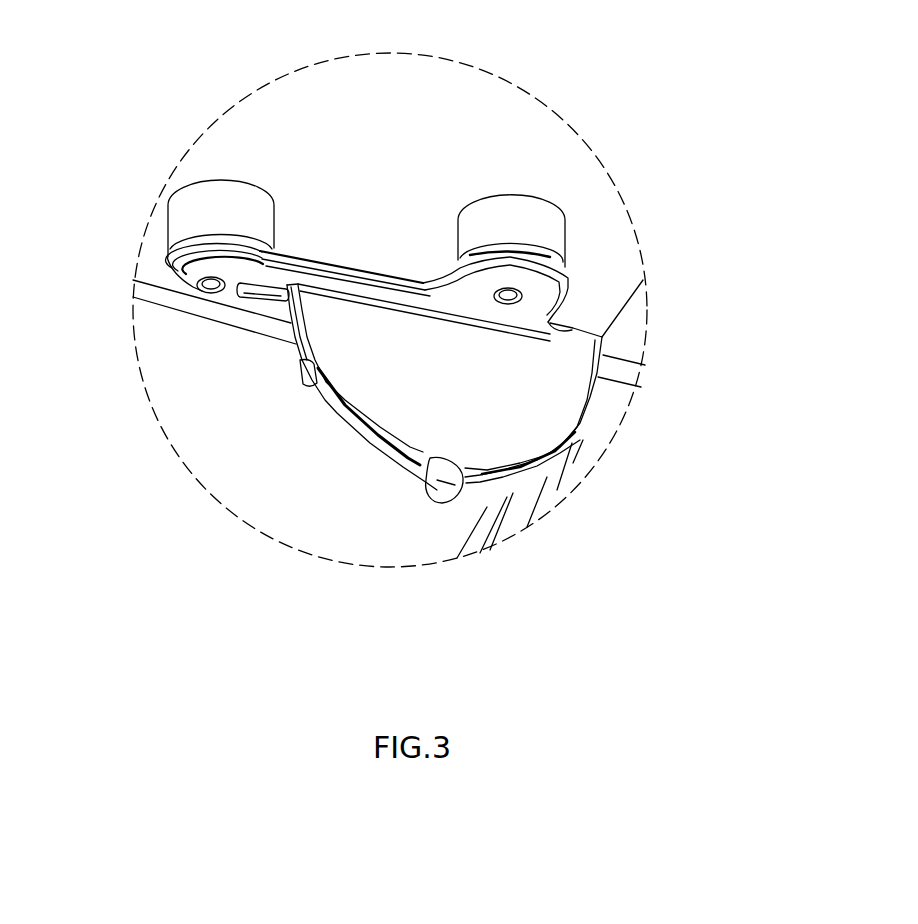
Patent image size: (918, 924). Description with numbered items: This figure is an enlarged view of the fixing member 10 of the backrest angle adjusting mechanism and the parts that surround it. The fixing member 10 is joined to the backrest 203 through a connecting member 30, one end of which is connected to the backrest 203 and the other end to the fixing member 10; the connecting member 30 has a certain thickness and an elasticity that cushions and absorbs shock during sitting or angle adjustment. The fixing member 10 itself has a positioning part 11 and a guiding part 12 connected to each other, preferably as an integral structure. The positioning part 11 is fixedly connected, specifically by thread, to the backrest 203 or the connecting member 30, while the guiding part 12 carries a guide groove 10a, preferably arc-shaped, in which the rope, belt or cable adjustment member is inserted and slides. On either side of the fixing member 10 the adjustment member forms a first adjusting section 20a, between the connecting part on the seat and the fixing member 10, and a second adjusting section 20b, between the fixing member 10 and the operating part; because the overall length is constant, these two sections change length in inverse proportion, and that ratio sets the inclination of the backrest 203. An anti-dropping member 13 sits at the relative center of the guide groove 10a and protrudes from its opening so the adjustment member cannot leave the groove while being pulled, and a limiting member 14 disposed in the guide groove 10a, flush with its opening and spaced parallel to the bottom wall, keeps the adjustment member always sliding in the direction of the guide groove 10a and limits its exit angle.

The backrest 203 is at (310, 122).
The connecting member 30 is at (227, 195).
The fixing member 10 is at (750, 100).
The positioning part 11 is at (490, 287).
The guiding part 12 is at (500, 370).
The anti-dropping member 13 is at (447, 487).
The limiting member 14 is at (297, 360).
The guide groove 10a is at (387, 443).
The first adjusting section 20a is at (625, 370).
The second adjusting section 20b is at (163, 291).